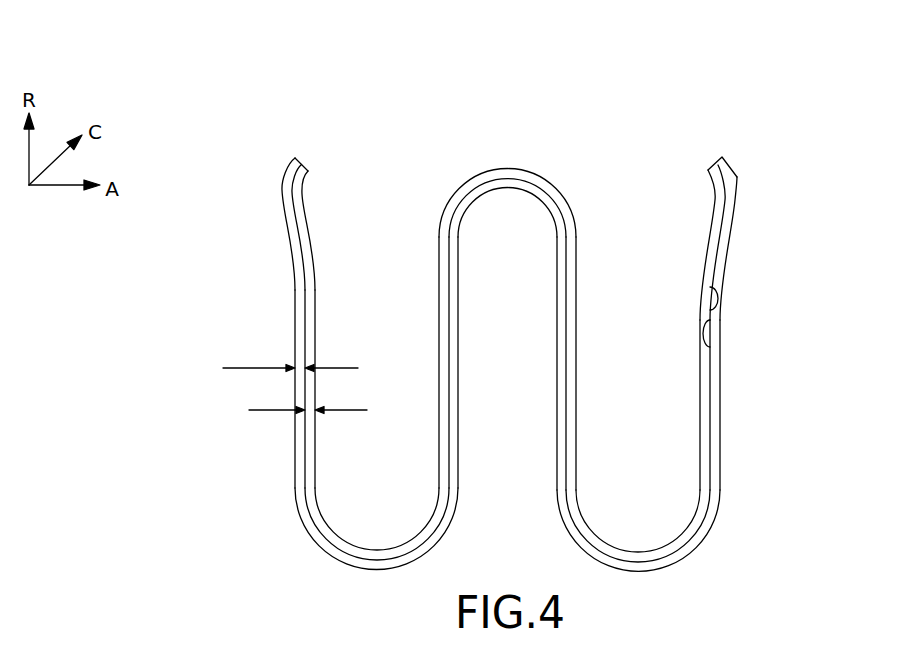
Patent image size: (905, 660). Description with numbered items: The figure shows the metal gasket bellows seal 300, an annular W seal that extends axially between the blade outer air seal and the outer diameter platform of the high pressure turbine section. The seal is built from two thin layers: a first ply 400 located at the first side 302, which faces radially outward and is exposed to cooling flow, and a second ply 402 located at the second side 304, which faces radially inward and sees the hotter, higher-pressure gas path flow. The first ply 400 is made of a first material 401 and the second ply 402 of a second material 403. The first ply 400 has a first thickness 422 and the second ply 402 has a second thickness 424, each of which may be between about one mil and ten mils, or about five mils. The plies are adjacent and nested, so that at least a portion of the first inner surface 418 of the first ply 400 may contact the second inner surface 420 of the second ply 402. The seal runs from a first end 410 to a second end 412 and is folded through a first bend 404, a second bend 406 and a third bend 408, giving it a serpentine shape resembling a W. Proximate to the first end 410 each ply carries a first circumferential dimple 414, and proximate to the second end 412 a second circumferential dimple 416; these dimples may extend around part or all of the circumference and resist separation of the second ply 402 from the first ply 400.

The metal gasket bellows seal 300 is at (102, 46).
The first ply 400 is at (309, 171).
The second ply 402 is at (300, 163).
The first end 410 is at (294, 159).
The first circumferential dimple 414 is at (282, 176).
The second thickness 424 is at (224, 368).
The first thickness 422 is at (250, 410).
The first bend 404 is at (378, 571).
The second bend 406 is at (508, 168).
The first side 302 is at (472, 178).
The second side 304 is at (481, 198).
The first material 401 is at (575, 413).
The second material 403 is at (562, 516).
The third bend 408 is at (665, 567).
The second end 412 is at (723, 158).
The second circumferential dimple 416 is at (734, 175).
The first inner surface 418 is at (710, 288).
The second inner surface 420 is at (706, 342).